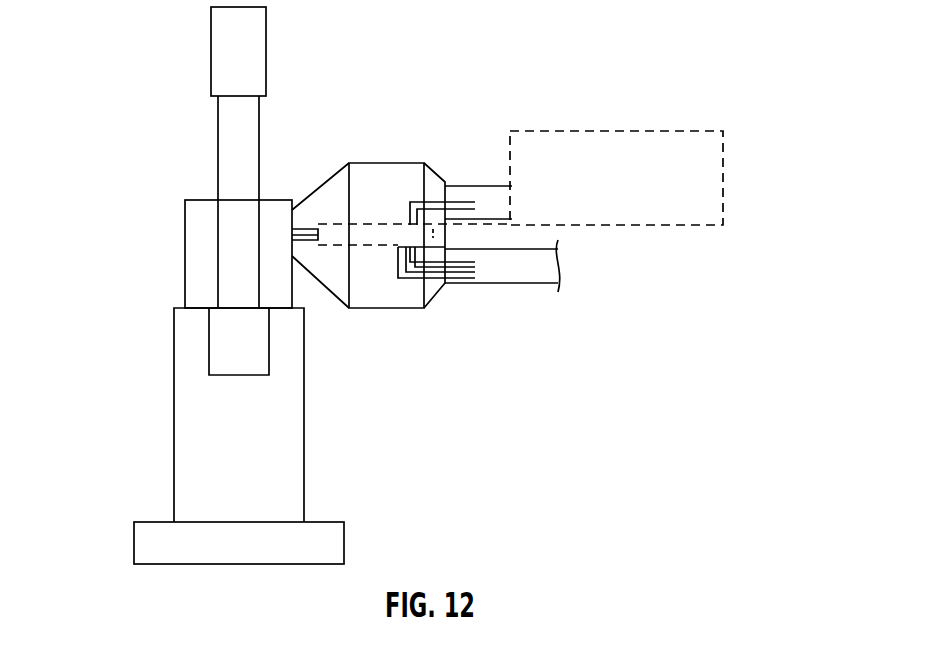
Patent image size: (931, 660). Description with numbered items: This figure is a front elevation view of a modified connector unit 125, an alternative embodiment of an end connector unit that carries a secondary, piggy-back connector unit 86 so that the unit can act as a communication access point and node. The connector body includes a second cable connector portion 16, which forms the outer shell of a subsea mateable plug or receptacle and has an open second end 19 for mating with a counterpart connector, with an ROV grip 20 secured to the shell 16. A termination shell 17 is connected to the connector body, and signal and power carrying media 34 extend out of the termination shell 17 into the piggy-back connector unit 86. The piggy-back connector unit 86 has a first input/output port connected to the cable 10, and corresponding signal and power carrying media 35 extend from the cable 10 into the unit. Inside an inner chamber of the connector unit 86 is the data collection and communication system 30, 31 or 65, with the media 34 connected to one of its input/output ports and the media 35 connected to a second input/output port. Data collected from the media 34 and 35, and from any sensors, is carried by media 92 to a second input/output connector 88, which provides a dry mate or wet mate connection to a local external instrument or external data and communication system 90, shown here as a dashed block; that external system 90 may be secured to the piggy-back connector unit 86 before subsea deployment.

The modified connector unit 125 is at (138, 151).
The ROV grip 20 is at (253, 115).
The termination shell 17 is at (185, 247).
The second cable connector portion 16 is at (188, 434).
The open second end 19 is at (327, 527).
The signal and power carrying media 34 is at (315, 229).
The piggy-back connector unit 86 is at (370, 163).
The signal and power carrying media 35 is at (424, 303).
The media 92 is at (437, 200).
The second input/output connector 88 is at (475, 186).
The cable 10 is at (495, 283).
The data collection and communication system 30 is at (414, 331).
The data collection and communication system 31 is at (414, 331).
The data collection and communication system 65 is at (353, 246).
The external data and communication system 90 is at (672, 131).